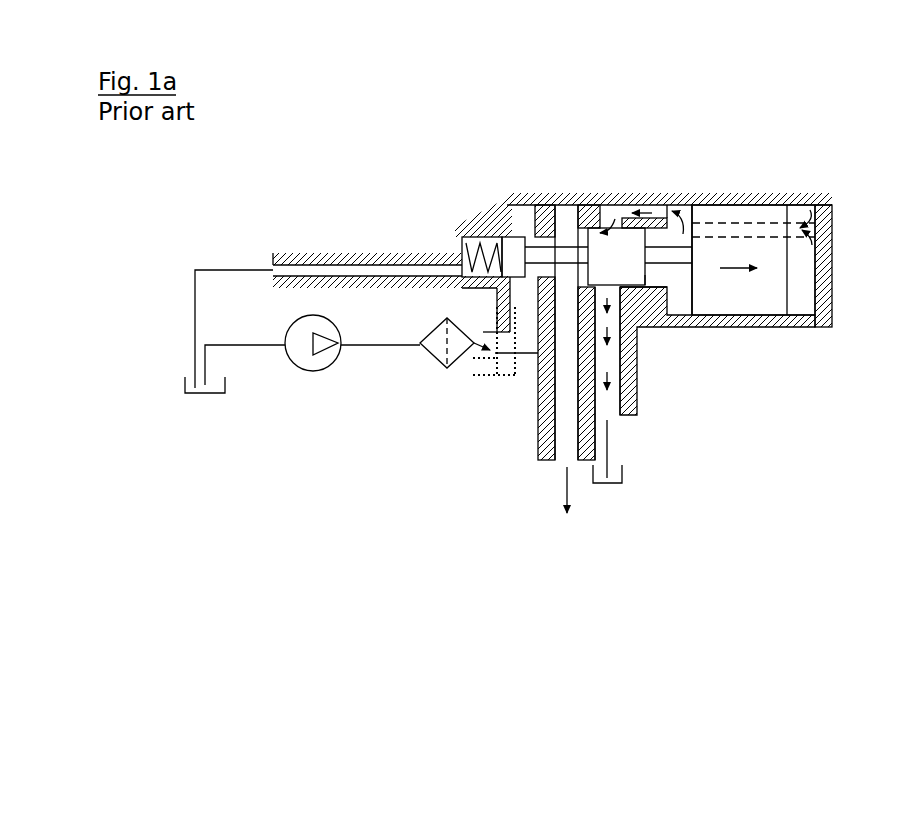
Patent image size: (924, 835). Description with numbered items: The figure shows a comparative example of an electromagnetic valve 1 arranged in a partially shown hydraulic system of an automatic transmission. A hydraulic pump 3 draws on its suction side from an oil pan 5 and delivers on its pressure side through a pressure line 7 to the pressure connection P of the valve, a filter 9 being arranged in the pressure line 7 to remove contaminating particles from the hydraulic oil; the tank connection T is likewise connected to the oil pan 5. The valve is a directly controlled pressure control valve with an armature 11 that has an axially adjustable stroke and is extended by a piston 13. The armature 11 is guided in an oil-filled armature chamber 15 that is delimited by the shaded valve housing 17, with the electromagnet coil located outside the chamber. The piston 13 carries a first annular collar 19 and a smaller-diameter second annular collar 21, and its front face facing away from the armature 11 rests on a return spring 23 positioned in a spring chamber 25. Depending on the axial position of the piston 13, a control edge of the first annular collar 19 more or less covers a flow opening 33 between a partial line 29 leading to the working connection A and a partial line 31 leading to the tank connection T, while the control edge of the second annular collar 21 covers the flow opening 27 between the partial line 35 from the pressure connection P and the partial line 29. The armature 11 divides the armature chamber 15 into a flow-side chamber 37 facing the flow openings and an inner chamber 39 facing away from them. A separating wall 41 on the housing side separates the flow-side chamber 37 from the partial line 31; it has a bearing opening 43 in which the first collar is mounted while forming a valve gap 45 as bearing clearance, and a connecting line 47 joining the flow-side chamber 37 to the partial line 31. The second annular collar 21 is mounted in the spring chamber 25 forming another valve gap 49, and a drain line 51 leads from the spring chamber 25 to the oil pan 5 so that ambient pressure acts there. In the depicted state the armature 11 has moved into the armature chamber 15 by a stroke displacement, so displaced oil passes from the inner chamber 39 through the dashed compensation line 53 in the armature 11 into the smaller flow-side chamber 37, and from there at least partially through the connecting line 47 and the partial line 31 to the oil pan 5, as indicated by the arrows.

The electromagnetic valve 1 is at (407, 193).
The hydraulic pump 3 is at (320, 371).
The oil pan 5 is at (198, 393).
The pressure line 7 is at (372, 346).
The filter 9 is at (445, 368).
The armature 11 is at (783, 205).
The piston 13 is at (562, 258).
The armature chamber 15 is at (772, 373).
The valve housing 17 is at (827, 203).
The first annular collar 19 is at (635, 288).
The second annular collar 21 is at (513, 245).
The return spring 23 is at (487, 237).
The spring chamber 25 is at (467, 237).
The flow opening 27 is at (523, 290).
The partial line 29 is at (555, 425).
The partial line 31 is at (613, 367).
The flow opening 33 is at (598, 228).
The partial line 35 is at (470, 349).
The flow-side chamber 37 is at (683, 300).
The inner chamber 39 is at (790, 302).
The separating wall 41 is at (737, 225).
The bearing opening 43 is at (648, 278).
The valve gap 45 is at (628, 268).
The connecting line 47 is at (667, 218).
The valve gap 49 is at (512, 245).
The drain line 51 is at (350, 263).
The compensation line 53 is at (745, 204).